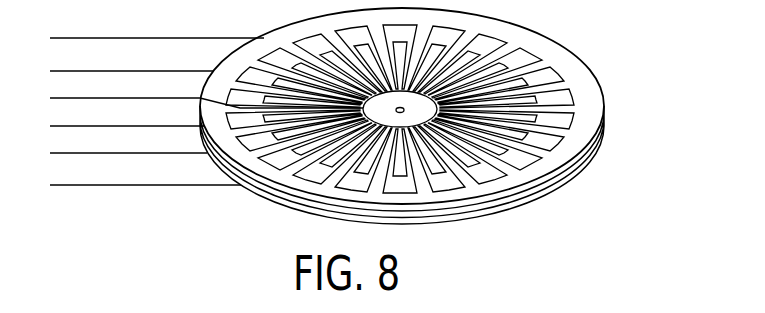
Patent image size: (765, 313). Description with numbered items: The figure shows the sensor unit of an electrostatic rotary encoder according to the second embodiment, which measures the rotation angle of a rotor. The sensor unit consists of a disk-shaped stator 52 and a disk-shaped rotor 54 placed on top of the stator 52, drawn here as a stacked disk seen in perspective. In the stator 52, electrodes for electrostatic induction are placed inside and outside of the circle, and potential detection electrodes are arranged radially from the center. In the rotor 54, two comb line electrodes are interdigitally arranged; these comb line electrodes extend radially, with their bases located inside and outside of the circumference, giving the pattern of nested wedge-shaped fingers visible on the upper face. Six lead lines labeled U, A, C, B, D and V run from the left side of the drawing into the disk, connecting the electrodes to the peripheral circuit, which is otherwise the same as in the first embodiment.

The stator 52 is at (585, 178).
The rotor 54 is at (562, 67).
The terminal lead U is at (148, 40).
The terminal lead A is at (122, 71).
The terminal lead C is at (198, 99).
The terminal lead B is at (118, 126).
The terminal lead D is at (120, 153).
The terminal lead V is at (137, 185).